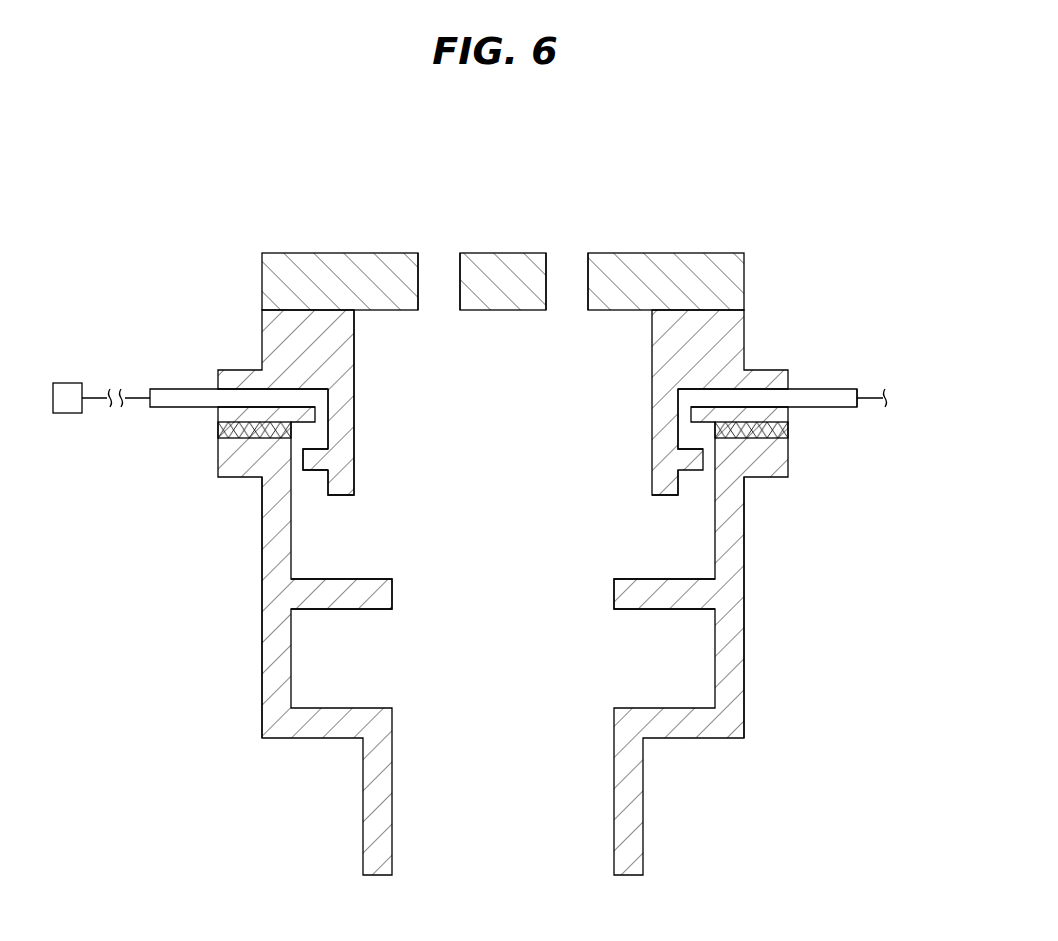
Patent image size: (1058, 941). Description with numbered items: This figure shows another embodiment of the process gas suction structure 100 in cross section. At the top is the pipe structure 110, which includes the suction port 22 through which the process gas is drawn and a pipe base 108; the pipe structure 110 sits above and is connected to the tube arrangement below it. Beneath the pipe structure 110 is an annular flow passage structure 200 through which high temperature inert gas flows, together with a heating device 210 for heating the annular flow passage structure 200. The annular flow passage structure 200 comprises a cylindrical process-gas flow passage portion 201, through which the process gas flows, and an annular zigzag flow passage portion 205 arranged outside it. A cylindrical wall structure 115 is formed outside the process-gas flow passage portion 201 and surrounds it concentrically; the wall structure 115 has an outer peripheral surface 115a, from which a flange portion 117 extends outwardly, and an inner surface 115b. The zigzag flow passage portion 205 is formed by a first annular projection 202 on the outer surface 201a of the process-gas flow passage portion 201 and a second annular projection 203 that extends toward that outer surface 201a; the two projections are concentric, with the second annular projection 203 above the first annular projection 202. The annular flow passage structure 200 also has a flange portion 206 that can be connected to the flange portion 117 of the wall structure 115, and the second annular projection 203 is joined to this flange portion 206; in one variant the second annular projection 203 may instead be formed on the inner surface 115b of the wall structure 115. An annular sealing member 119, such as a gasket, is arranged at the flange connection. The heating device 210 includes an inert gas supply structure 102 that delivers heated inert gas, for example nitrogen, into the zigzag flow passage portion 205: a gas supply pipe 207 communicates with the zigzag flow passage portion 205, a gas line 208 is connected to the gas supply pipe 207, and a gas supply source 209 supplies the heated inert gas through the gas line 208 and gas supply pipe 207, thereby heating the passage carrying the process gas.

The process gas suction structure 100 is at (583, 224).
The inert gas supply structure 102 is at (867, 371).
The pipe base 108 is at (746, 270).
The pipe structure 110 is at (711, 249).
The suction port 22 is at (437, 312).
The wall structure 115 is at (305, 743).
The outer peripheral surface 115a is at (262, 630).
The inner surface 115b is at (292, 666).
The flange portion 117 is at (233, 478).
The sealing member 119 is at (765, 440).
The annular flow passage structure 200 is at (261, 343).
The process-gas flow passage portion 201 is at (356, 451).
The outer surface 201a is at (683, 406).
The first annular projection 202 is at (307, 471).
The second annular projection 203 is at (300, 426).
The zigzag flow passage portion 205 is at (687, 499).
The flange portion 206 is at (768, 371).
The gas supply pipe 207 is at (163, 408).
The gas line 208 is at (128, 408).
The gas supply source 209 is at (67, 414).
The heating device 210 is at (159, 349).